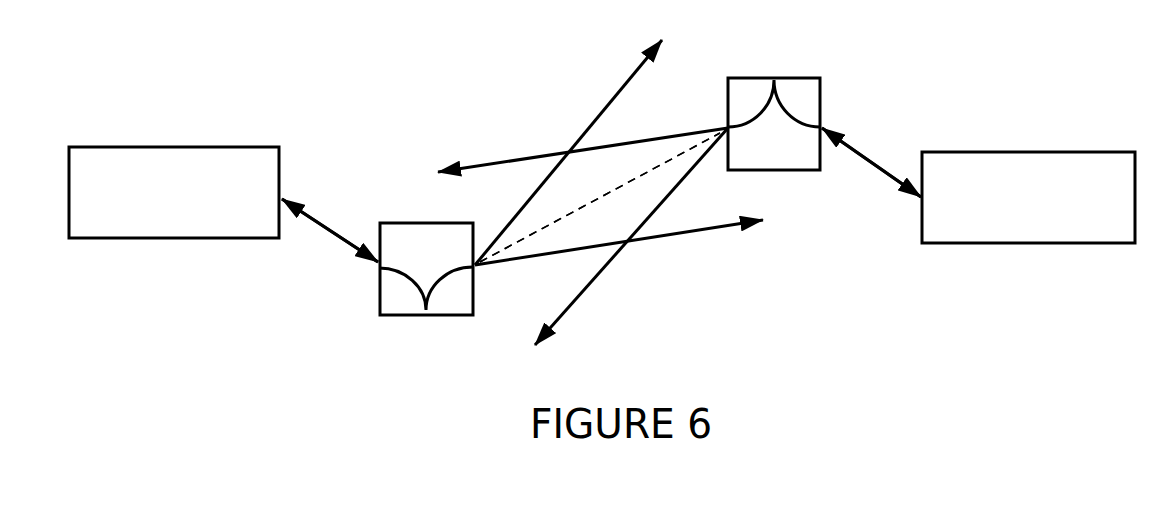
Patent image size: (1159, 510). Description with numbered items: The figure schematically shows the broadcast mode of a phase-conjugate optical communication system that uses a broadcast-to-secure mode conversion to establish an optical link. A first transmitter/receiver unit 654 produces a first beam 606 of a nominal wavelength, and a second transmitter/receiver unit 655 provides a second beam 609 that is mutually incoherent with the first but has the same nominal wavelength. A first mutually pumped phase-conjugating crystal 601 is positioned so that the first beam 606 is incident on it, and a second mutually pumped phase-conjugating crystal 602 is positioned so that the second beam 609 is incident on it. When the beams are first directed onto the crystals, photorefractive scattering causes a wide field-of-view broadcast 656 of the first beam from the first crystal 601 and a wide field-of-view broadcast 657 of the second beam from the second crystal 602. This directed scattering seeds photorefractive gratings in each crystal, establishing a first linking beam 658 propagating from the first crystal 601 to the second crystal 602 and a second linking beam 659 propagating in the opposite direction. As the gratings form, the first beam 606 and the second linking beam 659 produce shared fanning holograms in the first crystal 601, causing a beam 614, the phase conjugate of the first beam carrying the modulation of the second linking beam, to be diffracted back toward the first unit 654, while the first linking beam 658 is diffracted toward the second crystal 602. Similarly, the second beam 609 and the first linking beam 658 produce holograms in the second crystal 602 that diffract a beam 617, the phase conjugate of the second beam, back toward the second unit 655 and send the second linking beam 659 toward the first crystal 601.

The first mutually pumped phase-conjugating crystal 601 is at (427, 315).
The second mutually pumped phase-conjugating crystal 602 is at (767, 78).
The first beam 606 is at (330, 240).
The second beam 609 is at (873, 160).
The phase conjugate of the first beam 614 is at (337, 242).
The phase conjugate of the second beam 617 is at (878, 178).
The first transmitter/receiver unit 654 is at (203, 146).
The second transmitter/receiver unit 655 is at (1003, 152).
The wide field-of-view broadcast of the first beam 656 is at (697, 232).
The wide field-of-view broadcast of the second beam 657 is at (522, 157).
The first linking beam 658 is at (648, 170).
The second linking beam 659 is at (582, 207).